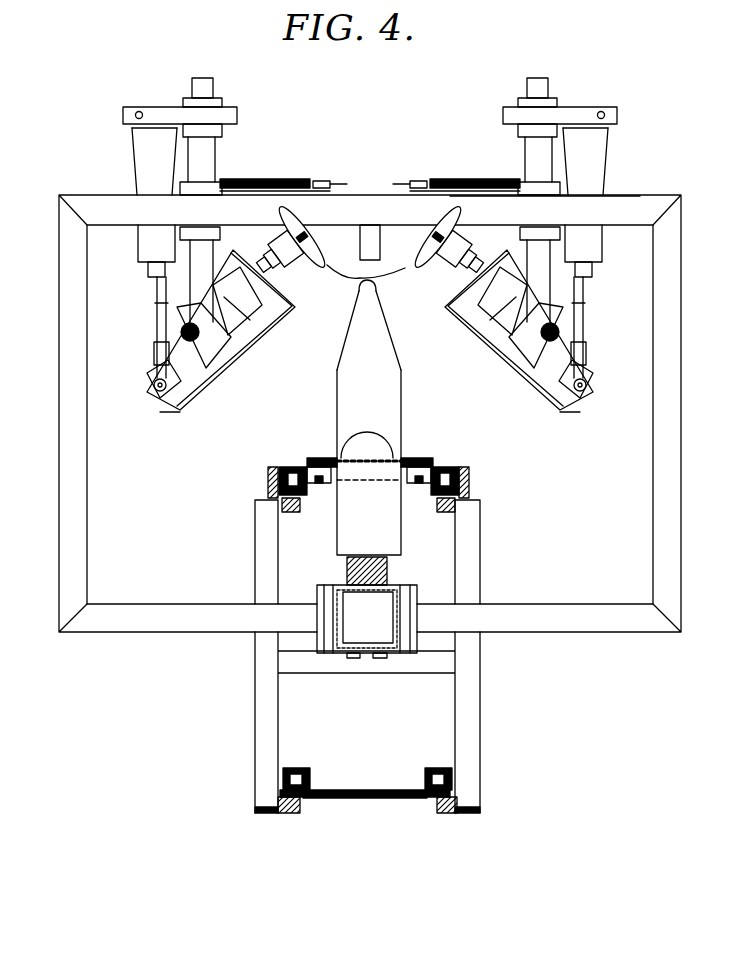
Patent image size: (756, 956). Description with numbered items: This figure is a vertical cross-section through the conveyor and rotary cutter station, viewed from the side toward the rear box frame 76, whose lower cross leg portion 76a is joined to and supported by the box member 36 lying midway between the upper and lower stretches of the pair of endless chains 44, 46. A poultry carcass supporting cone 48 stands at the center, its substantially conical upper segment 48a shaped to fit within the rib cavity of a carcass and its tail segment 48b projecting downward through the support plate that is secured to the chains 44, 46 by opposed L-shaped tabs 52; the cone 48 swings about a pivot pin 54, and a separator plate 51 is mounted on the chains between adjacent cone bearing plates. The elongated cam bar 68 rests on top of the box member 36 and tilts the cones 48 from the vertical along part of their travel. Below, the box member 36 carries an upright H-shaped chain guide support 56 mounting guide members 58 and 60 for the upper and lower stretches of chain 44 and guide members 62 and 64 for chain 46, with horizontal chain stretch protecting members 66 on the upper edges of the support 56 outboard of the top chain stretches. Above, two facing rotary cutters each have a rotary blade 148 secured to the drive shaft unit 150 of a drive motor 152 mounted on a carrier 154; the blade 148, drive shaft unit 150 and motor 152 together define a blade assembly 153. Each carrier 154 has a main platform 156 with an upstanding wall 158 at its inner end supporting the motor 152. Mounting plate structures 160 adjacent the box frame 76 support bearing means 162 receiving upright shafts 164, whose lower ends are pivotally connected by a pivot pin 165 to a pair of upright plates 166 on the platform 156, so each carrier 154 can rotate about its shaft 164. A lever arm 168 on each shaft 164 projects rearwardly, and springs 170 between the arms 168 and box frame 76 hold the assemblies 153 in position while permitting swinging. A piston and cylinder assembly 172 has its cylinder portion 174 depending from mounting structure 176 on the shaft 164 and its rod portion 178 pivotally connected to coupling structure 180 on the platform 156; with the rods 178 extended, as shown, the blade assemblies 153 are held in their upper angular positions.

The box member 36 is at (365, 652).
The endless chain 44 is at (293, 470).
The endless chain 46 is at (459, 472).
The poultry carcass supporting cone 48 is at (330, 378).
The upper segment of cone 48a is at (380, 398).
The tail segment of cone 48b is at (350, 528).
The separator plate 51 is at (342, 800).
The L-shaped tab 52 is at (300, 463).
The pivot pin 54 is at (328, 474).
The H-shaped chain guide support 56 is at (267, 687).
The chain engaging guide member 58 is at (302, 506).
The chain engaging guide member 60 is at (298, 803).
The chain engaging guide member 62 is at (440, 506).
The chain engaging guide member 64 is at (442, 803).
The chain stretch protecting member 66 is at (270, 472).
The cam bar 68 is at (388, 572).
The rear box frame 76 is at (670, 360).
The cross leg portion of box frame 76a is at (662, 203).
The rotary blade 148 is at (370, 268).
The drive shaft unit 150 is at (467, 224).
The drive motor 152 is at (158, 292).
The blade assembly 153 is at (421, 223).
The carrier 154 is at (185, 420).
The main platform 156 is at (217, 372).
The upstanding wall 158 is at (263, 226).
The mounting plate structure 160 is at (600, 197).
The bearing means 162 is at (197, 232).
The upright shaft 164 is at (203, 80).
The pivot pin 165 is at (170, 330).
The upright plate 166 is at (180, 357).
The lever arm 168 is at (205, 182).
The spring 170 is at (455, 180).
The piston and cylinder assembly 172 is at (128, 177).
The cylinder portion 174 is at (132, 129).
The mounting structure 176 is at (168, 110).
The rod portion 178 is at (160, 305).
The coupling structure 180 is at (150, 395).